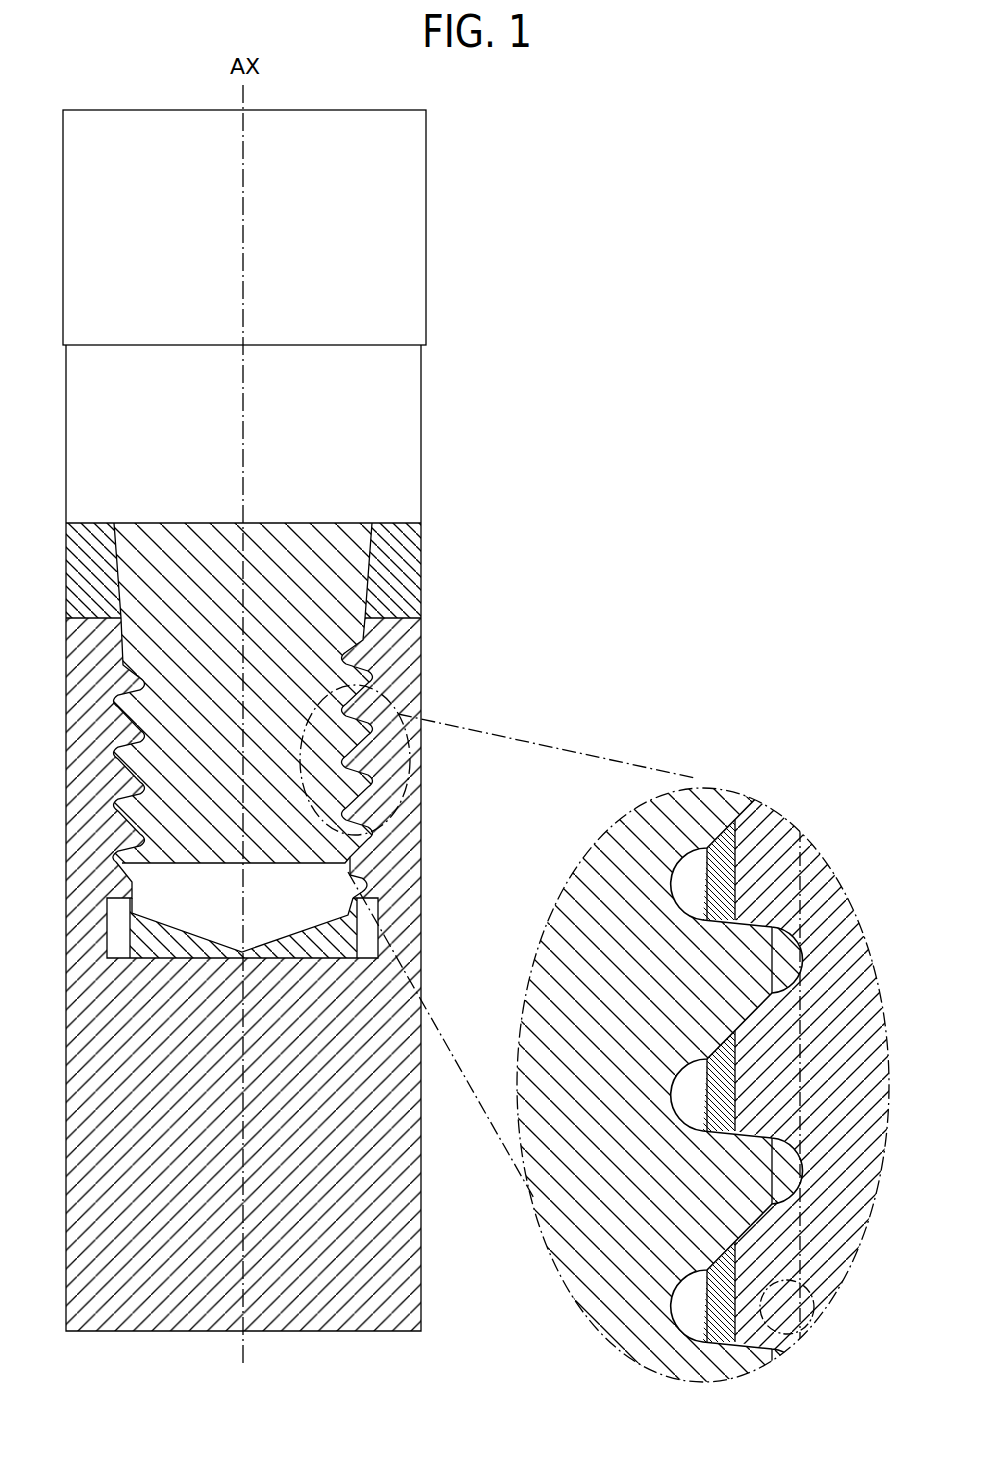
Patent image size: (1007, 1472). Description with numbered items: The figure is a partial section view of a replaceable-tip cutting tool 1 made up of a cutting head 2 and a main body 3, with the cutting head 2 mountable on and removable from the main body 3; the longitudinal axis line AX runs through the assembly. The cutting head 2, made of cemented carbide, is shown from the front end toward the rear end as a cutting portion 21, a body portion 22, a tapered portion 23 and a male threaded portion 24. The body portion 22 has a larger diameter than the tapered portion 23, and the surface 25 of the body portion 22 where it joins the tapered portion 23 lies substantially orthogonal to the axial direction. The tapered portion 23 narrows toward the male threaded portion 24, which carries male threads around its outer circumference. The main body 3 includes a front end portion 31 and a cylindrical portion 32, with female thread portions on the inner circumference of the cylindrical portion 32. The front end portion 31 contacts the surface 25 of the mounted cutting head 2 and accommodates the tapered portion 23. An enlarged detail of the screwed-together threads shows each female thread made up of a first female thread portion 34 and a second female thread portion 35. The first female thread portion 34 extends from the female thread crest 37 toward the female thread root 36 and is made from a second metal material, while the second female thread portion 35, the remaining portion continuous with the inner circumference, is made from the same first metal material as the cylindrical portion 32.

The cutting tool 1 is at (673, 420).
The cutting head 2 is at (540, 340).
The main body 3 is at (434, 645).
The cutting portion 21 is at (373, 218).
The body portion 22 is at (308, 425).
The tapered portion 23 is at (308, 595).
The male threaded portion 24 is at (278, 745).
The surface 25 is at (404, 543).
The front end portion 31 is at (387, 558).
The cylindrical portion 32 is at (834, 1077).
The first female thread portion 34 is at (717, 873).
The second female thread portion 35 is at (765, 873).
The female thread root 36 is at (770, 1173).
The female thread crest 37 is at (706, 1096).